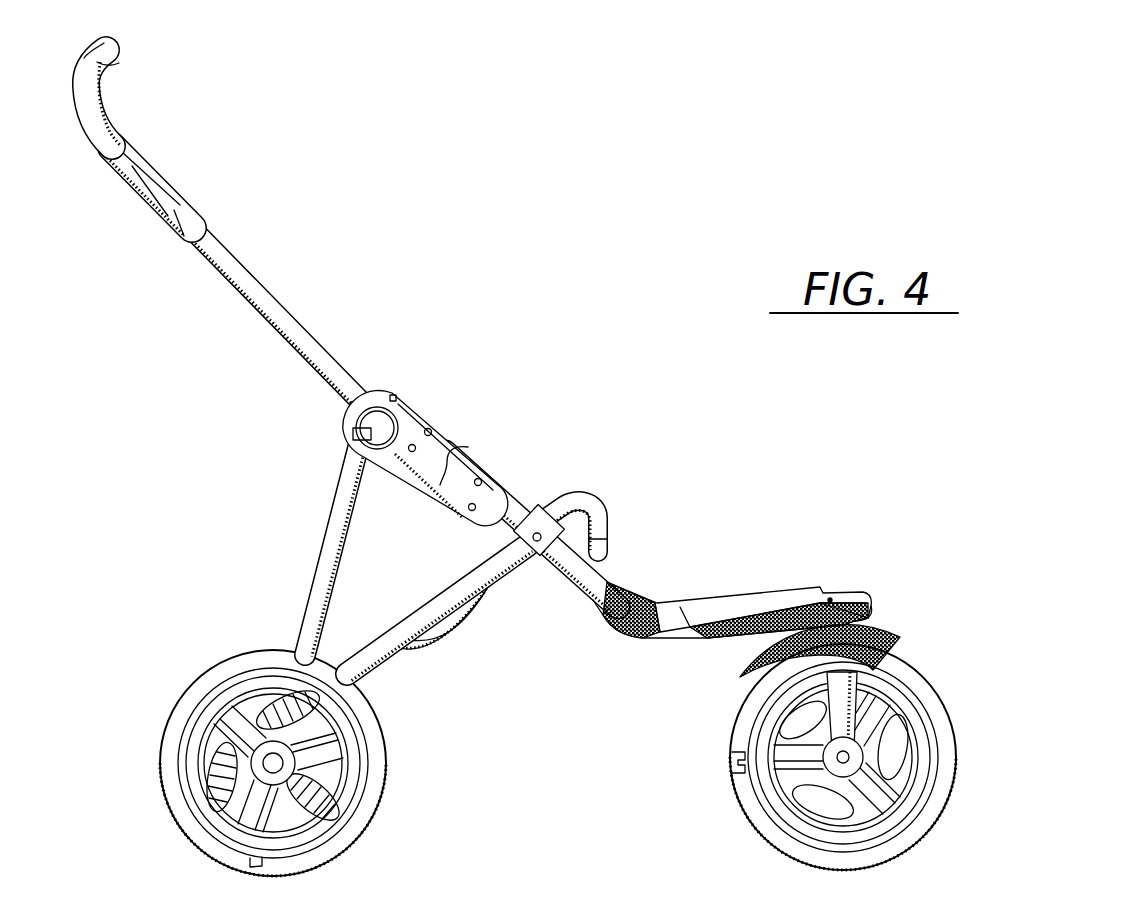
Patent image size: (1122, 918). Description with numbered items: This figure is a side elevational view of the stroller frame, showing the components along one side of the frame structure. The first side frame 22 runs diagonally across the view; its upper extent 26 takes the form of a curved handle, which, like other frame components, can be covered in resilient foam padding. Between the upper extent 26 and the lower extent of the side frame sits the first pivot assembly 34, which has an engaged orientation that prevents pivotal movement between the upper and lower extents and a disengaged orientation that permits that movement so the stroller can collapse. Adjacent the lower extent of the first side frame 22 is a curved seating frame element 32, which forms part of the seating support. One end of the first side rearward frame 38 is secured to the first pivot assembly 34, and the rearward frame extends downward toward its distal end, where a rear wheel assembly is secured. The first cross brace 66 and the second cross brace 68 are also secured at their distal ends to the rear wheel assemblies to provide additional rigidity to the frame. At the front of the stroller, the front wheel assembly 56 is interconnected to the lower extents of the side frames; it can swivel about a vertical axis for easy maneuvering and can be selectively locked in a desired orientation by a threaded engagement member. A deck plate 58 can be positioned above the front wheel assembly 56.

The first side frame 22 is at (293, 333).
The upper extent 26 is at (197, 222).
The curved seating frame element 32 is at (608, 521).
The first pivot assembly 34 is at (437, 445).
The first side rearward frame 38 is at (332, 541).
The front wheel assembly 56 is at (940, 618).
The deck plate 58 is at (733, 600).
The first cross brace 66 is at (373, 677).
The second cross brace 68 is at (455, 632).